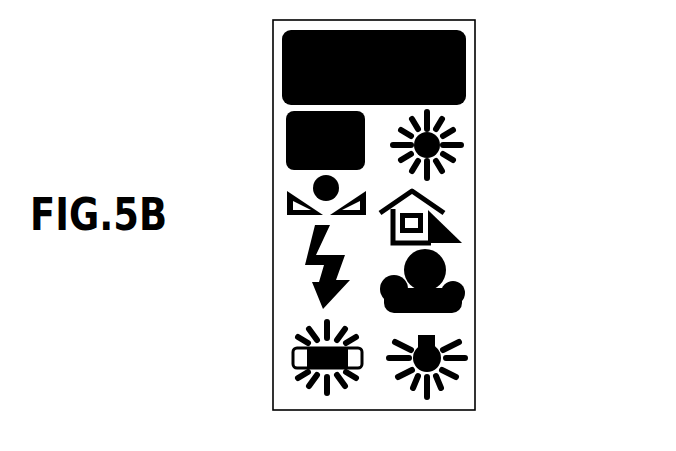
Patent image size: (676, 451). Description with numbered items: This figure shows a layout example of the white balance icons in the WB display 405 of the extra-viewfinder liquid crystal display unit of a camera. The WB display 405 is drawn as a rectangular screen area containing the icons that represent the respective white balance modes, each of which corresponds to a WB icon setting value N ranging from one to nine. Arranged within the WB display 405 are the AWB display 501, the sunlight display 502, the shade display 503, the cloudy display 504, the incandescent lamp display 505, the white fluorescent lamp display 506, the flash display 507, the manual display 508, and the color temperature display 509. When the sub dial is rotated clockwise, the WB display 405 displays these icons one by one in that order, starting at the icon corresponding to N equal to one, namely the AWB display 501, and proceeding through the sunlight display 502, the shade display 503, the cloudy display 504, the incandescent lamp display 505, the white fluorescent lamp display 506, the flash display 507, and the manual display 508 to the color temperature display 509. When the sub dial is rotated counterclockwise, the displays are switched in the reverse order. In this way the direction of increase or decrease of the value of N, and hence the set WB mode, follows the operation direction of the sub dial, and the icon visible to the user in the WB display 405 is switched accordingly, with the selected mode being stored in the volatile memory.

The WB display 405 is at (273, 29).
The AWB display 501 is at (467, 67).
The sunlight display 502 is at (462, 137).
The shade display 503 is at (462, 224).
The cloudy display 504 is at (463, 297).
The incandescent lamp display 505 is at (466, 355).
The white fluorescent lamp display 506 is at (292, 368).
The flash display 507 is at (308, 259).
The manual display 508 is at (288, 209).
The color temperature display 509 is at (284, 142).